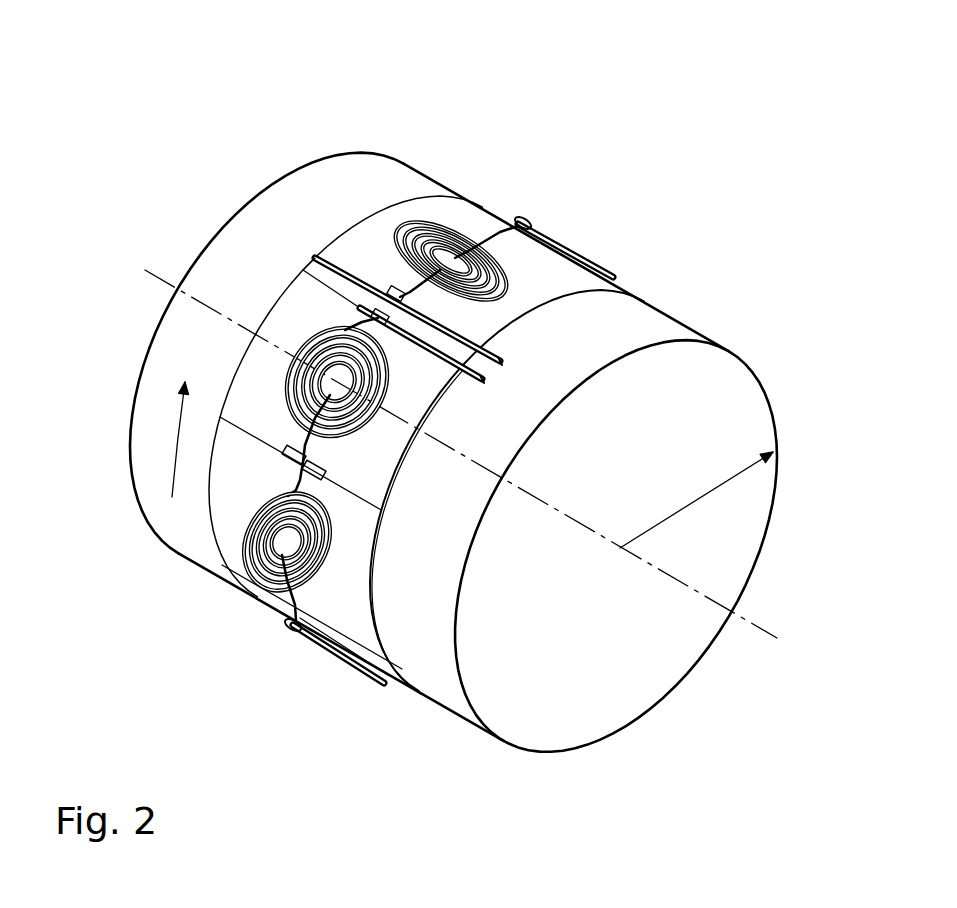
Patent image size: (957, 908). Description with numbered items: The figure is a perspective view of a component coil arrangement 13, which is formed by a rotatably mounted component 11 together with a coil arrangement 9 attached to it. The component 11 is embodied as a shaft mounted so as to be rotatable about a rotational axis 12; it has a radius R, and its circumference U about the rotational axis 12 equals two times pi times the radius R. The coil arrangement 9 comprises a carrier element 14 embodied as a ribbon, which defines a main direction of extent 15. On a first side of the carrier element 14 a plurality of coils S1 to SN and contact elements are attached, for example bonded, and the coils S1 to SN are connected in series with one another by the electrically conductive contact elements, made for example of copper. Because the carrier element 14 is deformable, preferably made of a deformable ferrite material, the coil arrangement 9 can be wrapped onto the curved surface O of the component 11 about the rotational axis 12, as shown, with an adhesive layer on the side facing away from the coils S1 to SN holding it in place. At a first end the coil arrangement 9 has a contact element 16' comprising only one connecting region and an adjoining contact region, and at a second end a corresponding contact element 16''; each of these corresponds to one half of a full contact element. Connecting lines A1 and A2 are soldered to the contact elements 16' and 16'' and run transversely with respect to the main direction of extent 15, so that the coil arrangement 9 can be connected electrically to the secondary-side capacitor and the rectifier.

The coil arrangement 9 is at (473, 192).
The component 11 is at (757, 430).
The rotational axis 12 is at (758, 630).
The component coil arrangement 13 is at (555, 172).
The carrier element 14 is at (363, 237).
The main direction of extent 15 is at (170, 430).
The contact element 16' is at (278, 257).
The contact element 16'' is at (269, 296).
The coil S1 is at (413, 195).
The coil SN is at (292, 372).
The connecting line A1 is at (500, 361).
The connecting line A2 is at (483, 378).
The curved surface O is at (150, 376).
The radius R is at (696, 500).
The circumference U is at (766, 541).